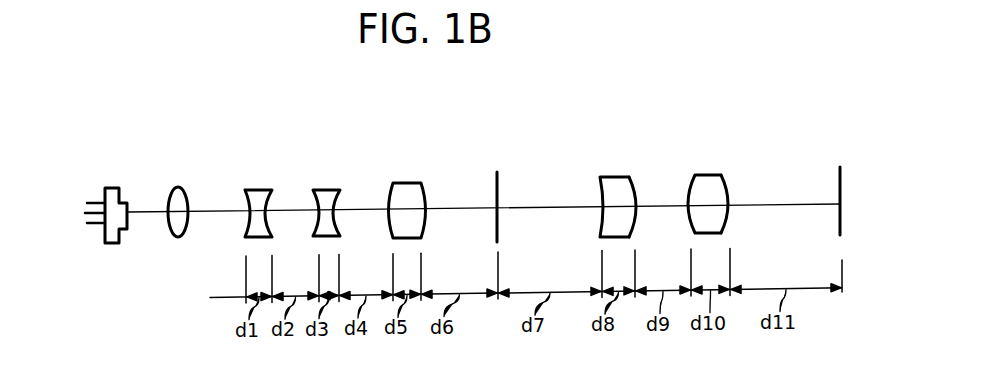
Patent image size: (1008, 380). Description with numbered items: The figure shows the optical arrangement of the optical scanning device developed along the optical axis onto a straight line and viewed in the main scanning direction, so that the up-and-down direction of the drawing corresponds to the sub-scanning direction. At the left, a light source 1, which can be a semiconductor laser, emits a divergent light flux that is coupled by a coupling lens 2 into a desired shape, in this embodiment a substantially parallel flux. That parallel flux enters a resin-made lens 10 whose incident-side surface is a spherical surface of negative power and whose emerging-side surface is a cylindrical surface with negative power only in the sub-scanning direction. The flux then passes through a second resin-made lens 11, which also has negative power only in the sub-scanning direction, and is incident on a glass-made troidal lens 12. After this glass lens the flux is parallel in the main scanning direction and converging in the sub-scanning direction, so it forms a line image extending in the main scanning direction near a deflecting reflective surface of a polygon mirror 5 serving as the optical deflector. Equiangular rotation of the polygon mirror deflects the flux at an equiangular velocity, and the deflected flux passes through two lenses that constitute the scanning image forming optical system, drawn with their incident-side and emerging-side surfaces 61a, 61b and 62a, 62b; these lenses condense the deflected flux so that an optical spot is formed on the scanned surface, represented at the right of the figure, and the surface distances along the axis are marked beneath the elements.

The light source 1 is at (110, 188).
The coupling lens 2 is at (180, 188).
The resin-made lens 10 is at (260, 189).
The resin-made lens 11 is at (330, 189).
The glass-made troidal lens 12 is at (410, 183).
The polygon mirror 5 is at (498, 180).
The first surface of lens 61 61a is at (600, 188).
The second surface of lens 61 61b is at (635, 197).
The first surface of lens 62 62a is at (689, 188).
The second surface of lens 62 62b is at (728, 188).